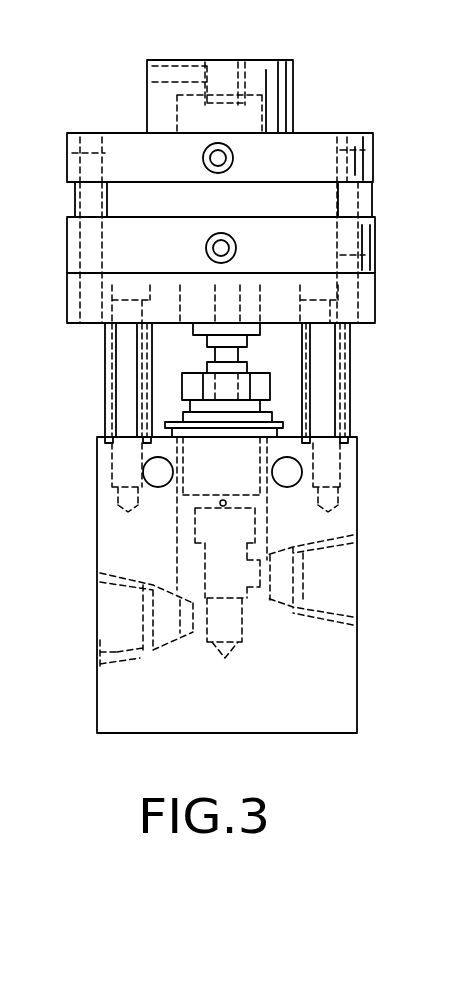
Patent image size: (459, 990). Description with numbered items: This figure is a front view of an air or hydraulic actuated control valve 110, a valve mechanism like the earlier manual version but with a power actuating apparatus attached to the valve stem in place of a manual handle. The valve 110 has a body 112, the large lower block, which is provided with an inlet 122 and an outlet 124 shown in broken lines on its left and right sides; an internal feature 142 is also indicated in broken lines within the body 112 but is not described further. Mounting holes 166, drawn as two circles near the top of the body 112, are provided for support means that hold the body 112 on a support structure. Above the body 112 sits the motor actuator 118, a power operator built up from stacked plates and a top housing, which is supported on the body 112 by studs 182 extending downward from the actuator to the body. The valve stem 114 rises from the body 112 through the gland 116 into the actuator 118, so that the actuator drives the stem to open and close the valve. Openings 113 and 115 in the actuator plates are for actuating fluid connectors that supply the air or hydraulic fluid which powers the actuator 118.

The valve 110 is at (297, 59).
The motor actuator 118 is at (354, 133).
The opening 113 is at (234, 158).
The bore 115 is at (205, 247).
The valve stem 114 is at (240, 352).
The studs 182 is at (108, 362).
The body 112 is at (357, 582).
The mounting holes 166 is at (143, 473).
The gland 116 is at (258, 508).
The side passage 142 is at (177, 530).
The inlet 122 is at (113, 656).
The outlet 124 is at (319, 615).